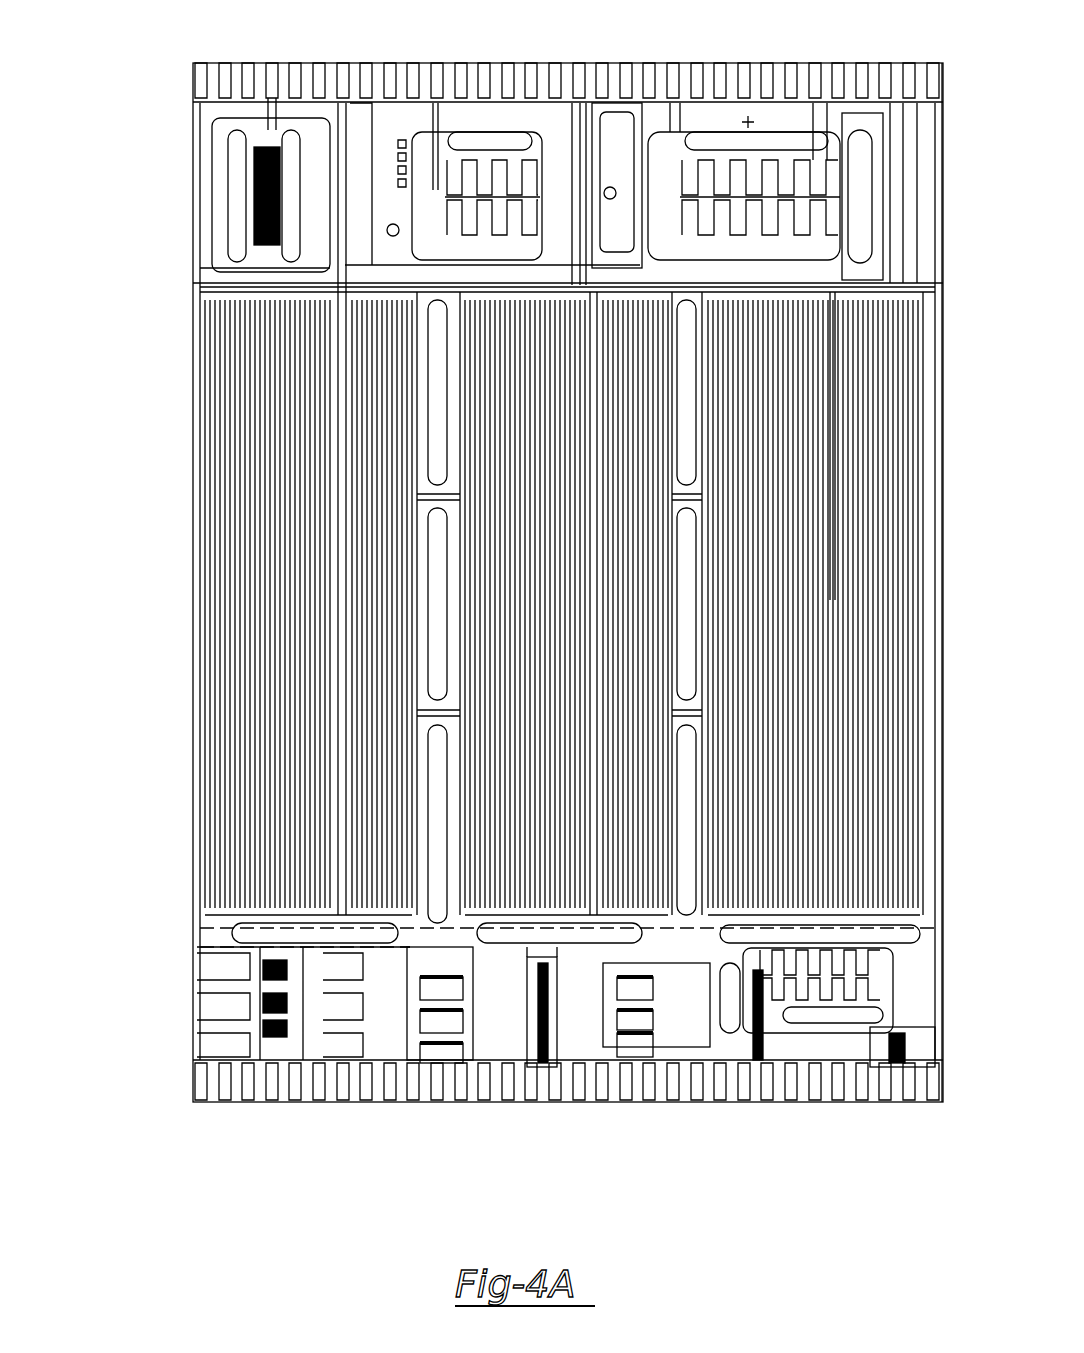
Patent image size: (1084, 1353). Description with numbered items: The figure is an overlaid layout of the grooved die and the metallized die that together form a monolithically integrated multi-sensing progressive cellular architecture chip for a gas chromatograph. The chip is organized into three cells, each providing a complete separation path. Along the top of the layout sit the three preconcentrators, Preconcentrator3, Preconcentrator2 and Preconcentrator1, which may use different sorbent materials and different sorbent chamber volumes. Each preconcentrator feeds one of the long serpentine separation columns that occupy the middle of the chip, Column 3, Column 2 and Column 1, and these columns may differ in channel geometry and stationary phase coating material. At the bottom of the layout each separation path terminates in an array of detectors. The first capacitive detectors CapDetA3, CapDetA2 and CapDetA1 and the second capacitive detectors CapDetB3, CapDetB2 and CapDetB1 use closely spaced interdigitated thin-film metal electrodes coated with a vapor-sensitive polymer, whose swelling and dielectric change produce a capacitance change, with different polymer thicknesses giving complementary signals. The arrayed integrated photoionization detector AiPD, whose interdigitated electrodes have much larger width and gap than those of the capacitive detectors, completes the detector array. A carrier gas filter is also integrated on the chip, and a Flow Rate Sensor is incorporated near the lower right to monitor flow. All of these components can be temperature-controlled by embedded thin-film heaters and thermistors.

The preconcentrator Preconcentrator3 is at (263, 128).
The preconcentrator Preconcentrator2 is at (496, 128).
The preconcentrator Preconcentrator1 is at (772, 128).
The separation column Column 3 is at (243, 482).
The separation column Column 2 is at (512, 606).
The separation column Column 1 is at (752, 676).
The arrayed integrated photoionization detector AiPD is at (252, 1050).
The capacitive detector CapDetB3 is at (433, 987).
The capacitive detector CapDetB2 is at (433, 1015).
The capacitive detector CapDetB1 is at (433, 1046).
The capacitive detector CapDetA3 is at (640, 985).
The capacitive detector CapDetA2 is at (640, 1012).
The capacitive detector CapDetA1 is at (640, 1040).
The flow rate sensor Flow Rate Sensor is at (903, 1048).